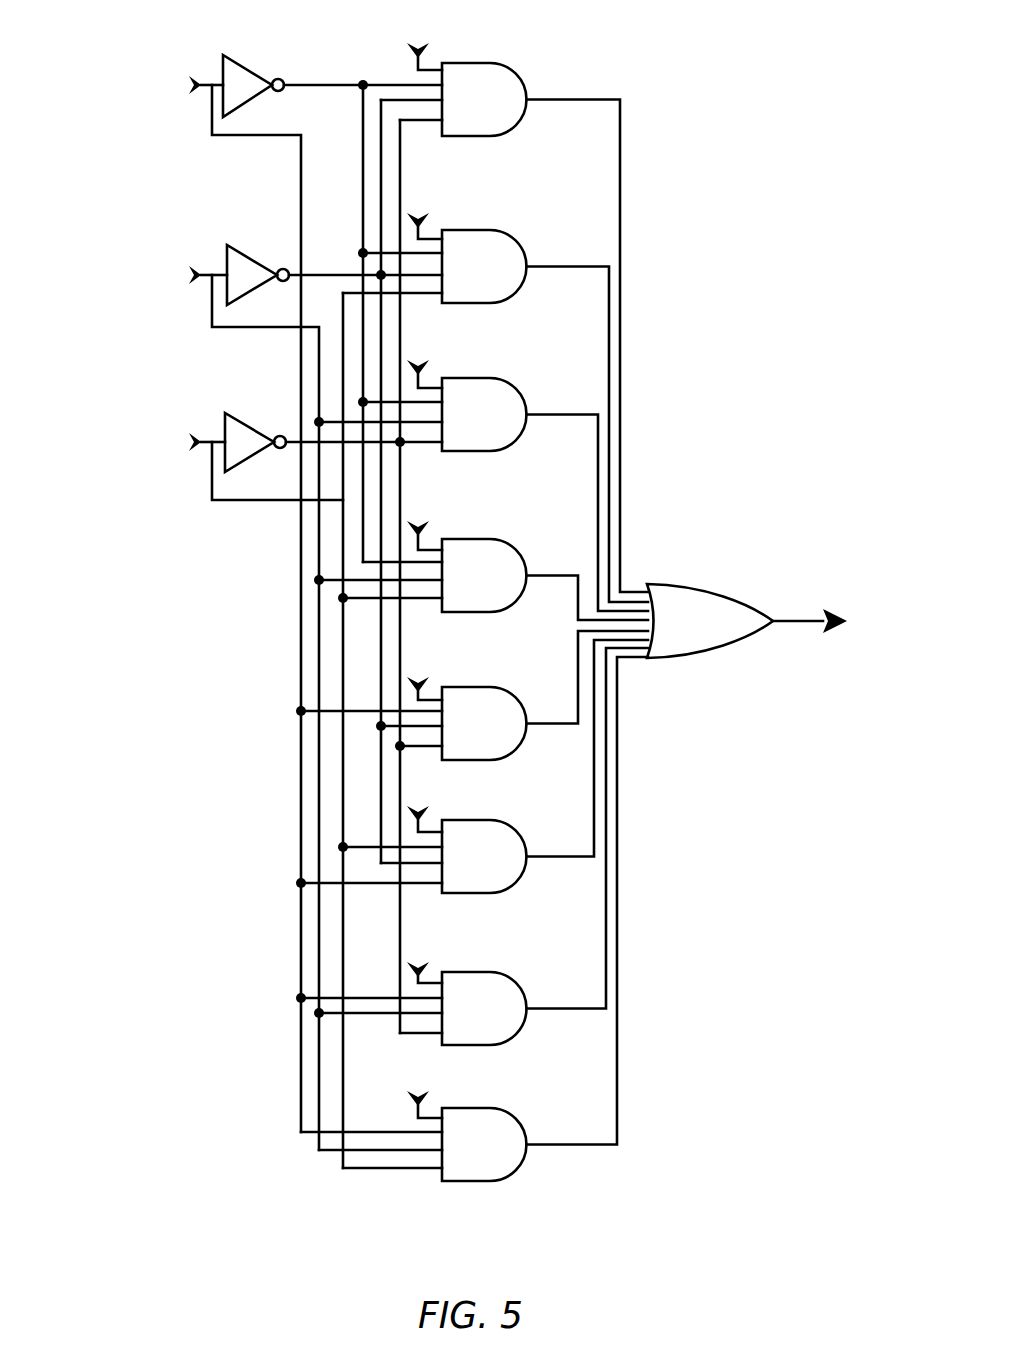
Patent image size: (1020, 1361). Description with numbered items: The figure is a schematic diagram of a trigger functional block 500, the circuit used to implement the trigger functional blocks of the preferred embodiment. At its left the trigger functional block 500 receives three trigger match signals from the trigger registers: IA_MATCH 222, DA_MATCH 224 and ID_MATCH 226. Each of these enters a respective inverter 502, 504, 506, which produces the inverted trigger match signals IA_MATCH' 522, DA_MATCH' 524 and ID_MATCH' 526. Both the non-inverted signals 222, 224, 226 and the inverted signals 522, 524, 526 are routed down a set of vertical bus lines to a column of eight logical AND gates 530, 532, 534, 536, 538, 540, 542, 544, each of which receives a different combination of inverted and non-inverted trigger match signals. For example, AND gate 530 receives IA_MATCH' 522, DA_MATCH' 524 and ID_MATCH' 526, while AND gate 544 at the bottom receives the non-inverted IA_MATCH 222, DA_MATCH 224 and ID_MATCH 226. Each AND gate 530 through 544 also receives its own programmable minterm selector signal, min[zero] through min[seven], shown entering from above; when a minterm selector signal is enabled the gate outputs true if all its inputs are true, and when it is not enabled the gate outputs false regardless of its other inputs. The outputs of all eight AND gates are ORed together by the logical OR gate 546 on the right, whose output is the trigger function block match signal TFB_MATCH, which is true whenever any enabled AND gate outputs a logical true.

The trigger functional block 500 is at (163, 19).
The IA_MATCH trigger match signal 222 is at (157, 109).
The DA_MATCH trigger match signal 224 is at (163, 302).
The ID_MATCH trigger match signal 226 is at (170, 464).
The inverter 502 is at (251, 72).
The inverter 504 is at (260, 268).
The inverter 506 is at (253, 438).
The IA_MATCH' inverted trigger match signal 522 is at (305, 88).
The DA_MATCH' inverted trigger match signal 524 is at (297, 282).
The ID_MATCH' inverted trigger match signal 526 is at (288, 450).
The AND gate 530 is at (498, 110).
The AND gate 532 is at (498, 277).
The AND gate 534 is at (498, 425).
The AND gate 536 is at (498, 586).
The AND gate 538 is at (498, 734).
The AND gate 540 is at (498, 867).
The AND gate 542 is at (498, 1019).
The AND gate 544 is at (498, 1156).
The OR gate 546 is at (725, 634).